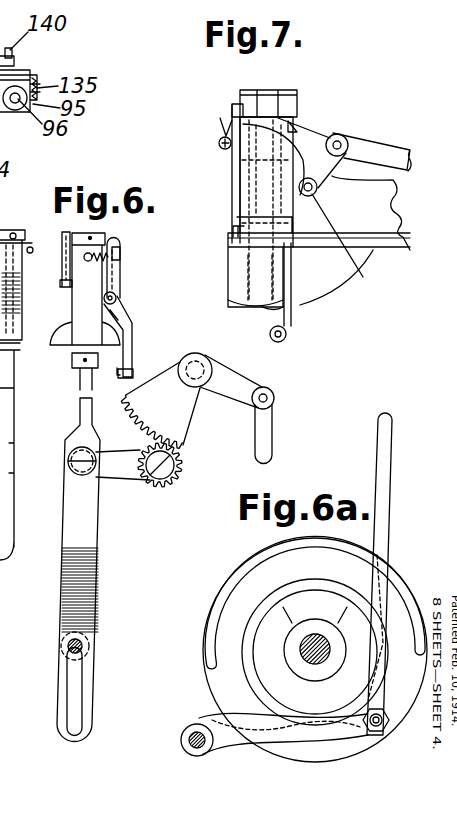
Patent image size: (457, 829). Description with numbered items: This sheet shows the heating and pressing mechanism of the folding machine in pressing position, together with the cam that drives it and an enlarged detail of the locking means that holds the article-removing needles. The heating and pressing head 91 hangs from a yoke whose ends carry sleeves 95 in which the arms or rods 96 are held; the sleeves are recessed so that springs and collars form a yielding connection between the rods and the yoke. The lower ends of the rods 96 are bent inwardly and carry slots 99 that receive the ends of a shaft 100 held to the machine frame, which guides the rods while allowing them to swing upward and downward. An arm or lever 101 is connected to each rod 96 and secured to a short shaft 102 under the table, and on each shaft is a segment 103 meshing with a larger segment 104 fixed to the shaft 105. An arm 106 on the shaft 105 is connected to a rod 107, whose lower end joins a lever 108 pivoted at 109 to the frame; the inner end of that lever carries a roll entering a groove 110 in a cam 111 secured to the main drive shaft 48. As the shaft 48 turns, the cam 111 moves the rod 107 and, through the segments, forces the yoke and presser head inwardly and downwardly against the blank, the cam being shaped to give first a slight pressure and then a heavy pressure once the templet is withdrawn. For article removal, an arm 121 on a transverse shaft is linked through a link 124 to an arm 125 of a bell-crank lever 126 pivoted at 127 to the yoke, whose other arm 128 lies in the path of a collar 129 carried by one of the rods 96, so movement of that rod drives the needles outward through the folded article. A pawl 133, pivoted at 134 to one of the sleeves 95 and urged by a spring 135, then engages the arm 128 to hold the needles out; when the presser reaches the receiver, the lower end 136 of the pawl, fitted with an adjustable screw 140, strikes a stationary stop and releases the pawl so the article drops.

In FIG. 6A, the main drive shaft 48 is at (312, 666).
In FIG. 7, the heating and pressing head 91 is at (243, 208).
In FIG. 6, the sleeve 95 is at (80, 305).
In FIG. 7, the arm or rod 96 is at (263, 92).
In FIG. 6, the arm or rod 96 is at (14, 413).
In FIG. 6, the slot 99 is at (62, 706).
In FIG. 6, the shaft 100 is at (68, 647).
In FIG. 6, the arm or lever 101 is at (118, 468).
In FIG. 6, the short shaft 102 is at (161, 472).
In FIG. 6, the segment 103 is at (168, 452).
In FIG. 6, the larger segment 104 is at (183, 434).
In FIG. 6, the shaft 105 is at (204, 365).
In FIG. 6, the arm 106 is at (243, 381).
In FIG. 6, the rod 107 is at (268, 430).
In FIG. 6A, the rod 107 is at (379, 457).
In FIG. 6A, the lever 108 is at (210, 718).
In FIG. 6A, the pivot 109 is at (182, 738).
In FIG. 6A, the groove 110 is at (381, 726).
In FIG. 6A, the cam 111 is at (227, 633).
In FIG. 6, the arm 121 is at (66, 275).
In FIG. 7, the link 124 is at (387, 145).
In FIG. 7, the arm of bell-crank lever 125 is at (332, 178).
In FIG. 6, the arm of bell-crank lever 125 is at (13, 183).
In FIG. 7, the bell-crank lever 126 is at (335, 140).
In FIG. 6, the bell-crank lever 126 is at (110, 262).
In FIG. 7, the pivot 127 is at (361, 242).
In FIG. 7, the arm of bell-crank lever 128 is at (292, 130).
In FIG. 7, the collar 129 is at (240, 95).
In FIG. 6, the collar 129 is at (20, 75).
In FIG. 7, the pawl 133 is at (232, 165).
In FIG. 6, the pawl 133 is at (121, 278).
In FIG. 7, the pivot 134 is at (232, 230).
In FIG. 6, the pivot 134 is at (117, 299).
In FIG. 7, the spring 135 is at (221, 141).
In FIG. 6, the spring 135 is at (118, 253).
In FIG. 7, the lower end of pawl 136 is at (293, 287).
In FIG. 6, the lower end of pawl 136 is at (130, 350).
In FIG. 7, the adjustable screw 140 is at (290, 333).
In FIG. 6, the adjustable screw 140 is at (125, 372).